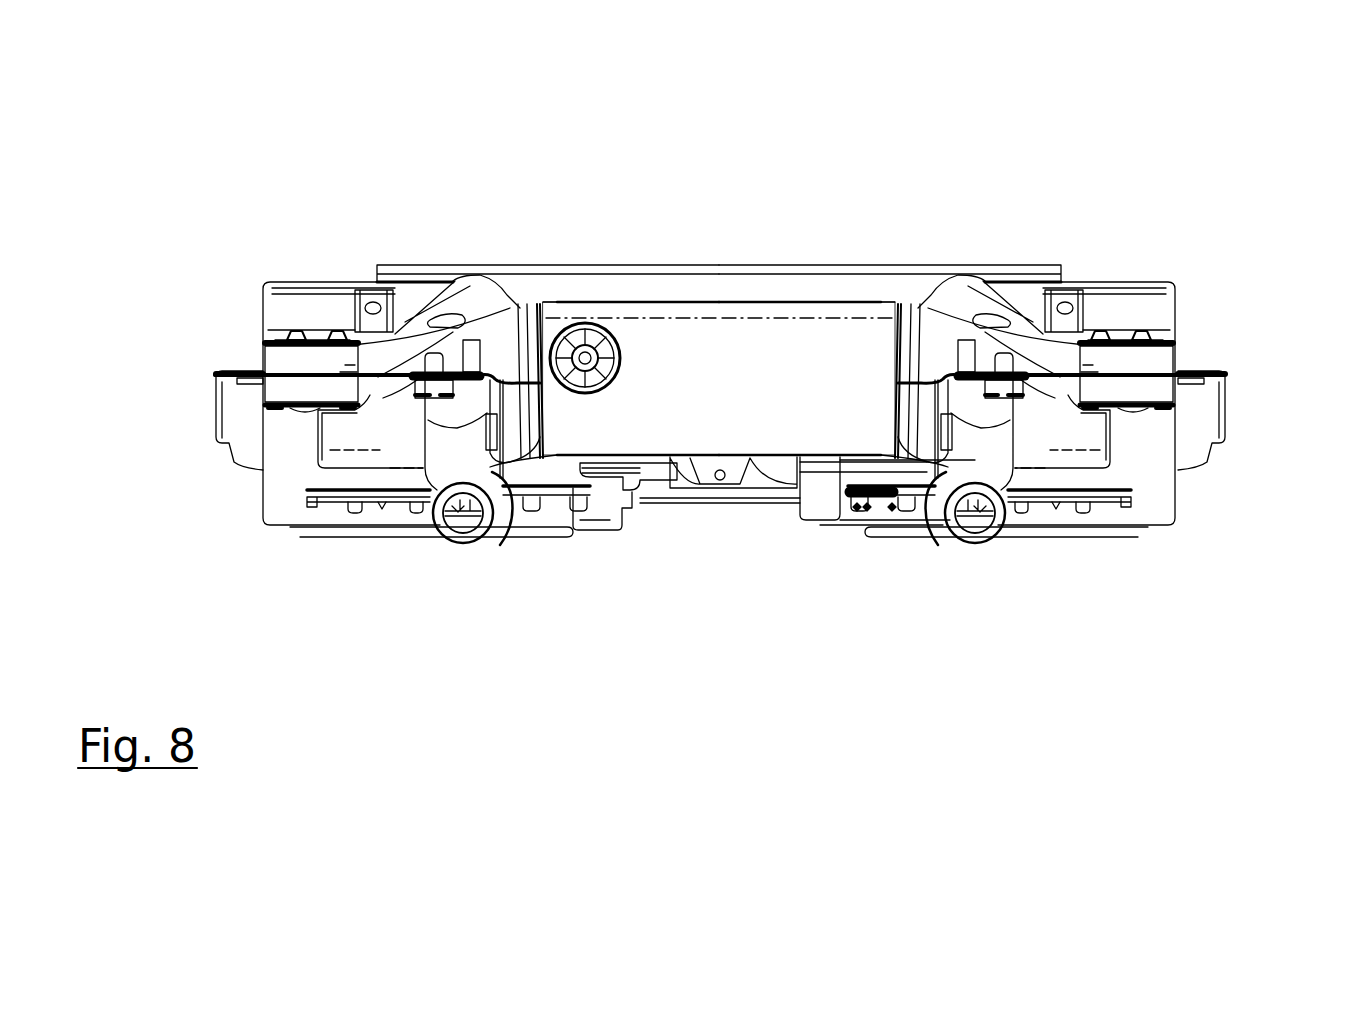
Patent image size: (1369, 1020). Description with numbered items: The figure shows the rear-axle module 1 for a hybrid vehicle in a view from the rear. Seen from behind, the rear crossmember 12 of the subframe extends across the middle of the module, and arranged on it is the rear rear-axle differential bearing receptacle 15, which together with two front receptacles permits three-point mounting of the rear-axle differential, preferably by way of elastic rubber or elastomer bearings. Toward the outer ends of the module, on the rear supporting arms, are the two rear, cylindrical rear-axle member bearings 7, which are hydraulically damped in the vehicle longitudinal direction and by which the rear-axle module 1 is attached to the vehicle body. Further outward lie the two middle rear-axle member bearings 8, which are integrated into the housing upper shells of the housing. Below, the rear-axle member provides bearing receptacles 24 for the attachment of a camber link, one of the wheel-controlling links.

The rear-axle module 1 is at (257, 174).
The rear rear-axle member bearing 7 is at (305, 365).
The middle rear-axle member bearing 8 is at (247, 377).
The rear crossmember 12 is at (766, 395).
The rear rear-axle differential bearing receptacle 15 is at (598, 368).
The bearing receptacle 24 is at (467, 523).